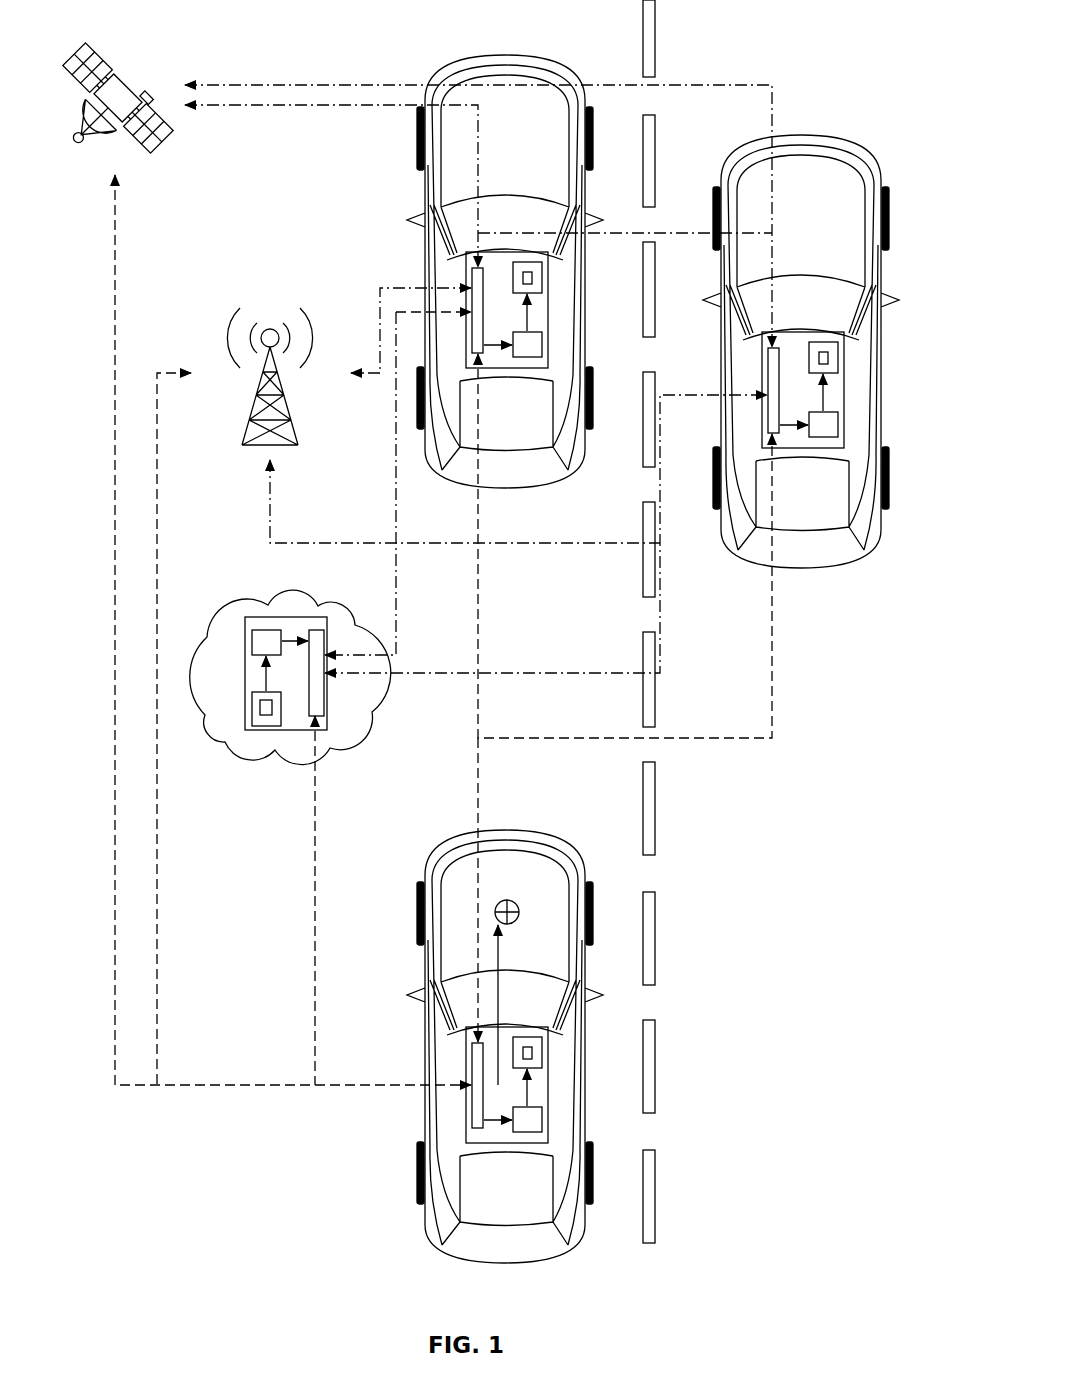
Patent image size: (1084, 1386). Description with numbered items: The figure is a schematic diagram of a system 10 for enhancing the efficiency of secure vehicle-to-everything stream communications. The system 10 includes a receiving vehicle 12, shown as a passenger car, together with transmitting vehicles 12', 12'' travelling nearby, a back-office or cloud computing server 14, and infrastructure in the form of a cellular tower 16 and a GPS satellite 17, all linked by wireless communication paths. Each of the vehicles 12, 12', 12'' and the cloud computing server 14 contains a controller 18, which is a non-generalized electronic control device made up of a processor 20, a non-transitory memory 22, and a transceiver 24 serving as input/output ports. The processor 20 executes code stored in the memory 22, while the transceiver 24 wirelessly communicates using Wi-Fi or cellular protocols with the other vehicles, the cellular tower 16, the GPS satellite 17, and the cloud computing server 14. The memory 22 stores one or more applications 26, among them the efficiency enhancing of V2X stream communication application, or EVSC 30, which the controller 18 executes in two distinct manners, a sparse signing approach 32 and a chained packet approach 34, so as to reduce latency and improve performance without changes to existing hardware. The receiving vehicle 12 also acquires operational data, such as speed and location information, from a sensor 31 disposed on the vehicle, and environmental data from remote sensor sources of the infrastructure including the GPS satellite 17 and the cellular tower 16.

The system 10 is at (776, 1188).
The vehicle 12 is at (468, 1046).
The transmitting vehicle 12' is at (470, 271).
The transmitting vehicle 12'' is at (801, 326).
The cloud computing server 14 is at (197, 698).
The cellular tower 16 is at (270, 308).
The GPS satellite 17 is at (126, 76).
The controller 18 is at (536, 315).
The processor 20 is at (543, 343).
The memory 22 is at (543, 280).
The transceiver 24 is at (470, 336).
The application 26 is at (499, 534).
The efficiency enhancing of V2X stream communication application (EVSC) 30 is at (544, 665).
The sensor 31 is at (495, 908).
The sparse signing approach (SSA) 32 is at (544, 665).
The chained packet approach (CPA) 34 is at (528, 272).